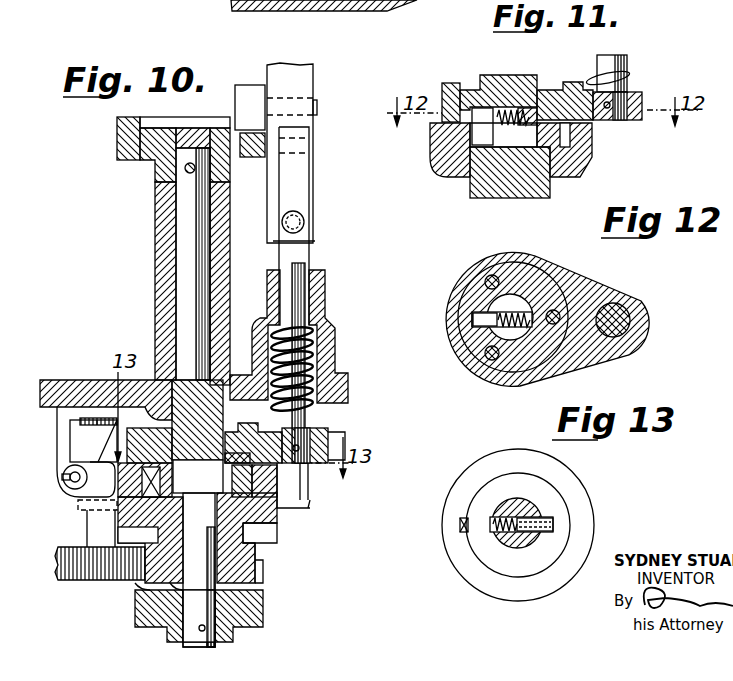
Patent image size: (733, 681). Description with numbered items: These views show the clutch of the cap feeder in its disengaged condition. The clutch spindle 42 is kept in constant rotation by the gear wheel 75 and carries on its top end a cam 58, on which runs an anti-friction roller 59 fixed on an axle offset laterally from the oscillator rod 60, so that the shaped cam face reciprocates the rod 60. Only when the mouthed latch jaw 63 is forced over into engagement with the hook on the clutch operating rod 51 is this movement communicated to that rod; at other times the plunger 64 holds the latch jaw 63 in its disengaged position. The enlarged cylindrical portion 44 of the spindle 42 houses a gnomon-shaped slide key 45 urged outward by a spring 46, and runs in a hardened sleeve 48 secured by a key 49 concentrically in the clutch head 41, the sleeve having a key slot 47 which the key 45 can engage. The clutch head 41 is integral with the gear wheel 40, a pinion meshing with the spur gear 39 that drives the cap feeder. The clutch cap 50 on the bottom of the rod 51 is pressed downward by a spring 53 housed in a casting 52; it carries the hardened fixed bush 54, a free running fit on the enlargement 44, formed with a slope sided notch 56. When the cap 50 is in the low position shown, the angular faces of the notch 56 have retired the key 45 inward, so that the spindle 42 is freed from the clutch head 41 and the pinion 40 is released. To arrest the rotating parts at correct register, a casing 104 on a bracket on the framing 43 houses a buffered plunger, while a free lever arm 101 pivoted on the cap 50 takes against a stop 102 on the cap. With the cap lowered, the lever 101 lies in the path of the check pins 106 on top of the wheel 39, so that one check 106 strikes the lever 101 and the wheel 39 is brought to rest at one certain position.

In FIG. 10, the spur gear 39 is at (87, 577).
In FIG. 10, the gear wheel 40 is at (257, 565).
In FIG. 10, the clutch head 41 is at (262, 535).
In FIG. 13, the clutch head 41 is at (575, 493).
In FIG. 10, the clutch spindle 42 is at (187, 218).
In FIG. 11, the clutch spindle 42 is at (500, 193).
In FIG. 10, the framing 43 is at (156, 265).
In FIG. 10, the enlarged cylindrical portion 44 is at (203, 384).
In FIG. 11, the enlarged cylindrical portion 44 is at (490, 76).
In FIG. 12, the enlarged cylindrical portion 44 is at (502, 285).
In FIG. 13, the enlarged cylindrical portion 44 is at (498, 505).
In FIG. 10, the slide key 45 is at (197, 436).
In FIG. 11, the slide key 45 is at (480, 131).
In FIG. 12, the slide key 45 is at (465, 350).
In FIG. 13, the slide key 45 is at (537, 514).
In FIG. 10, the spring 46 is at (221, 456).
In FIG. 11, the spring 46 is at (515, 108).
In FIG. 12, the spring 46 is at (538, 300).
In FIG. 13, the spring 46 is at (495, 528).
In FIG. 10, the key slot 47 is at (262, 492).
In FIG. 11, the key slot 47 is at (462, 172).
In FIG. 13, the key slot 47 is at (553, 522).
In FIG. 10, the hardened sleeve 48 is at (235, 480).
In FIG. 11, the hardened sleeve 48 is at (440, 165).
In FIG. 13, the hardened sleeve 48 is at (518, 525).
In FIG. 10, the key 49 is at (130, 483).
In FIG. 13, the key 49 is at (458, 525).
In FIG. 10, the clutch cap 50 is at (345, 437).
In FIG. 11, the clutch cap 50 is at (635, 119).
In FIG. 12, the clutch cap 50 is at (603, 268).
In FIG. 10, the clutch operating rod 51 is at (297, 447).
In FIG. 11, the clutch operating rod 51 is at (607, 56).
In FIG. 12, the clutch operating rod 51 is at (632, 320).
In FIG. 10, the casting 52 is at (327, 327).
In FIG. 10, the spring 53 is at (323, 363).
In FIG. 11, the spring 53 is at (628, 75).
In FIG. 10, the hardened fixed bush 54 is at (253, 437).
In FIG. 11, the hardened fixed bush 54 is at (548, 90).
In FIG. 12, the hardened fixed bush 54 is at (524, 282).
In FIG. 10, the slope sided notch 56 is at (149, 437).
In FIG. 11, the slope sided notch 56 is at (457, 86).
In FIG. 12, the slope sided notch 56 is at (470, 320).
In FIG. 10, the cam 58 is at (247, 130).
In FIG. 10, the anti-friction roller 59 is at (240, 90).
In FIG. 10, the oscillator rod 60 is at (303, 75).
In FIG. 10, the latch jaw 63 is at (300, 165).
In FIG. 10, the plunger 64 is at (303, 215).
In FIG. 10, the gear wheel 75 is at (263, 612).
In FIG. 10, the free lever arm 101 is at (292, 490).
In FIG. 10, the stop 102 is at (308, 501).
In FIG. 10, the casing 104 is at (80, 417).
In FIG. 10, the check pins 106 is at (150, 523).